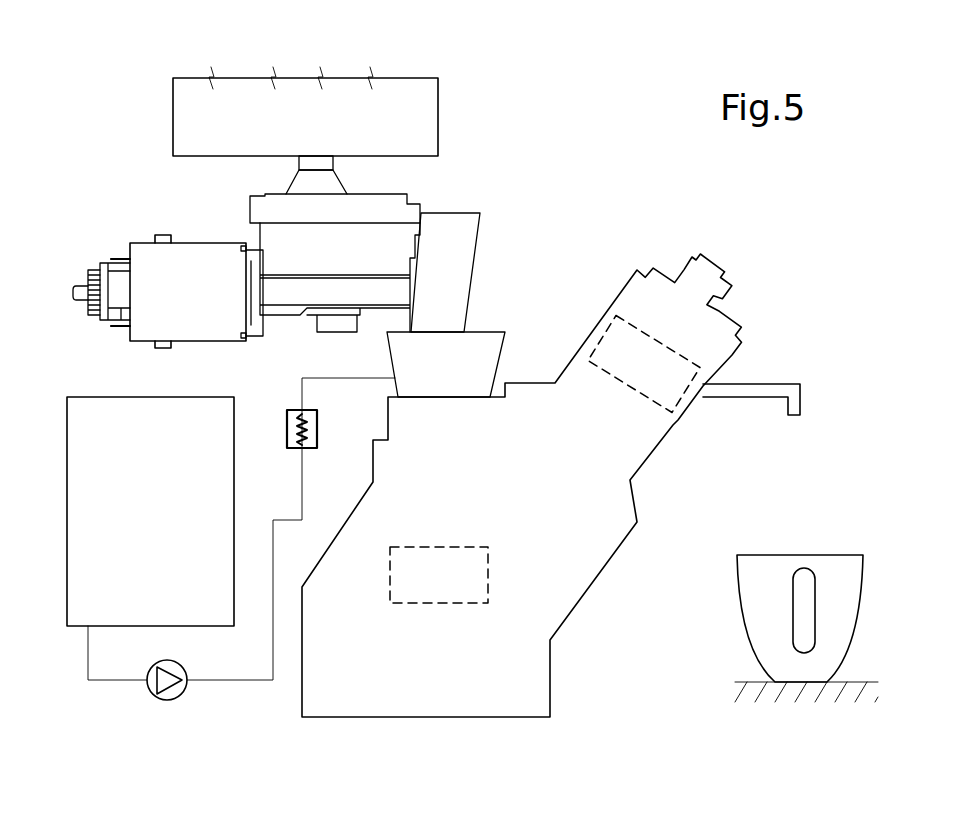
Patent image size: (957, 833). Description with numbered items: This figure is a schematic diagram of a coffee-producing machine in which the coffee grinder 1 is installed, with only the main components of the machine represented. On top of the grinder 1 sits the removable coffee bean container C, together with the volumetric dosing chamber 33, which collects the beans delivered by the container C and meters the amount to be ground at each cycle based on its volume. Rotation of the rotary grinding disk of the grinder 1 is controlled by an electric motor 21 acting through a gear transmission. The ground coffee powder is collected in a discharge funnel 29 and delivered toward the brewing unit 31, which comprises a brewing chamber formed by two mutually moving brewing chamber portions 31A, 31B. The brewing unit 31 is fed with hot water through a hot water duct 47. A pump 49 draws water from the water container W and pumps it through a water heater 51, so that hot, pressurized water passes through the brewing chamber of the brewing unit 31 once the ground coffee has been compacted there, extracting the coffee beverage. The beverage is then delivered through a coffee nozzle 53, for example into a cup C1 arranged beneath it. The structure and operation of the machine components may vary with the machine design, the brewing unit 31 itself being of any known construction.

The coffee grinder 1 is at (568, 179).
The removable coffee bean container C is at (388, 93).
The volumetric dosing chamber 33 is at (325, 178).
The electric motor 21 is at (205, 253).
The discharge funnel 29 is at (458, 230).
The brewing unit 31 is at (378, 727).
The brewing chamber portion 31A is at (672, 412).
The brewing chamber portion 31B is at (442, 557).
The coffee nozzle 53 is at (752, 392).
The water container W is at (93, 473).
The hot water duct 47 is at (302, 380).
The water heater 51 is at (317, 428).
The pump 49 is at (178, 697).
The cup C1 is at (783, 562).